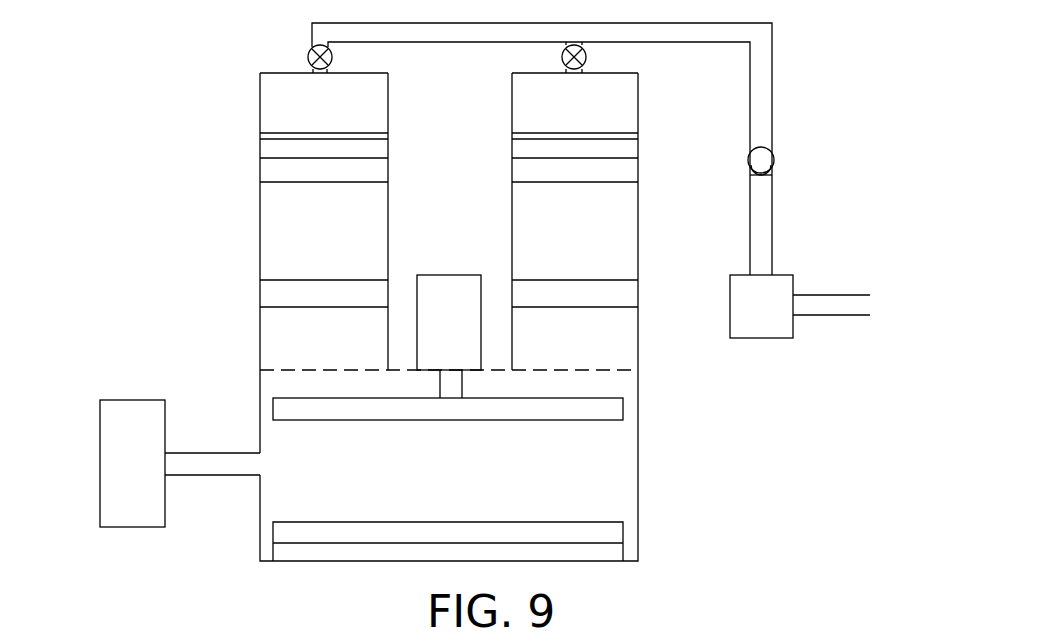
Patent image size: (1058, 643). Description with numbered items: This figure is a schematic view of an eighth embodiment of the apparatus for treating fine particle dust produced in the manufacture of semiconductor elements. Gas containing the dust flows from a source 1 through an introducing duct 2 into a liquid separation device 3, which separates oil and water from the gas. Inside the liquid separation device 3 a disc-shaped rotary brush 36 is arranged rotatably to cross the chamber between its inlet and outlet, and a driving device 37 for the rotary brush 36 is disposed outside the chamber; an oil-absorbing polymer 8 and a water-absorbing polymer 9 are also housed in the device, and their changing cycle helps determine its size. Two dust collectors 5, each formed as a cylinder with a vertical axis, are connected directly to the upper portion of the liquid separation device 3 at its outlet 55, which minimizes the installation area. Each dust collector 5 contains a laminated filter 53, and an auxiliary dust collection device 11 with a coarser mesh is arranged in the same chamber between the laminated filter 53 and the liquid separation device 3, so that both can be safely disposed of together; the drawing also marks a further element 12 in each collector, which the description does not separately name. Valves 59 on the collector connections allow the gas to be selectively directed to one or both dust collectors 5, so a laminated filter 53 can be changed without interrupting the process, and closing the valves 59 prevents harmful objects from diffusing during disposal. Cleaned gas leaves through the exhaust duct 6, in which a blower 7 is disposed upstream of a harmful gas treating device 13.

The source 1 is at (100, 427).
The introducing duct 2 is at (212, 477).
The liquid separation device 3 is at (653, 452).
The dust collector 5 is at (246, 158).
The exhaust duct 6 is at (773, 77).
The blower 7 is at (775, 153).
The oil-absorbing polymer 8 is at (595, 533).
The water-absorbing polymer 9 is at (608, 553).
The auxiliary dust collection device 11 is at (310, 307).
The heat insulating plate 12 is at (246, 293).
The harmful gas treating device 13 is at (770, 332).
The rotary brush 36 is at (452, 412).
The driving device 37 is at (452, 275).
The laminated filter 53 is at (315, 190).
The outlet 55 is at (260, 397).
The valve 59 is at (308, 55).